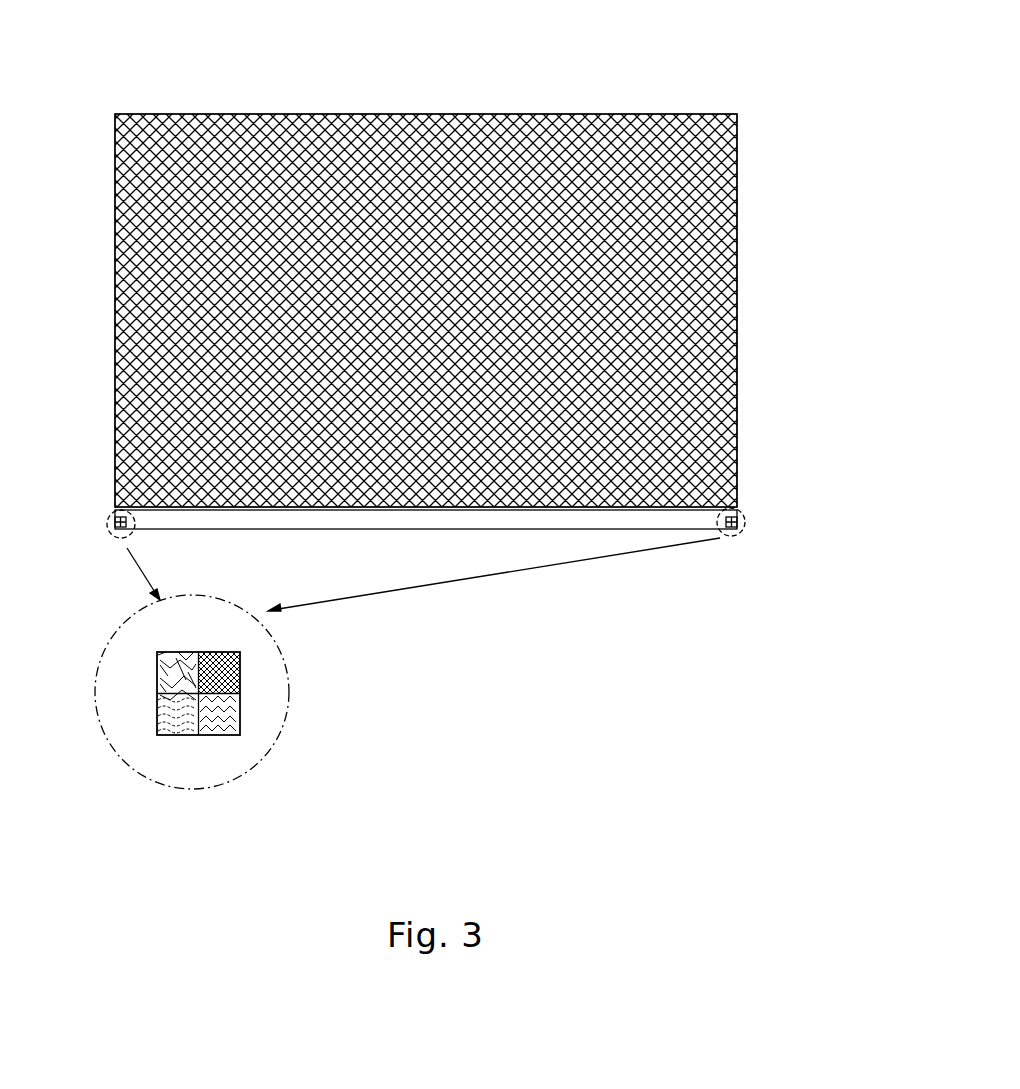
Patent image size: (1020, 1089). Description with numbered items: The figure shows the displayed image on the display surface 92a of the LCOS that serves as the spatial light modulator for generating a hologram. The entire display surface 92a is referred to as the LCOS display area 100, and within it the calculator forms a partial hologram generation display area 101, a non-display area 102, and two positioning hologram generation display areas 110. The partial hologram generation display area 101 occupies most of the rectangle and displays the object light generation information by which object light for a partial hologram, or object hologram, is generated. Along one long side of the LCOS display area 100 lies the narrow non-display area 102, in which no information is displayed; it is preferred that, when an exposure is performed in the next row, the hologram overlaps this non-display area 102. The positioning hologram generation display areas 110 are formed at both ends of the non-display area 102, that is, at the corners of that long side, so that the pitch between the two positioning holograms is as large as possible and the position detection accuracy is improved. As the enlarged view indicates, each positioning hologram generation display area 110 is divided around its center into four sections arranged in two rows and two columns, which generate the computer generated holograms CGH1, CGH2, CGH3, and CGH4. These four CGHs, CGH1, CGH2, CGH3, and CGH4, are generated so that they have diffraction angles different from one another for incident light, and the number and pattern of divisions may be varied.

The display surface 92a is at (152, 60).
The LCOS display area 100 is at (633, 115).
The partial hologram generation display area 101 is at (727, 254).
The non-display area 102 is at (354, 520).
The positioning hologram generation display area 110 is at (115, 522).
The computer generated hologram CGH1 is at (157, 665).
The computer generated hologram CGH2 is at (157, 720).
The computer generated hologram CGH3 is at (240, 715).
The computer generated hologram CGH4 is at (240, 668).